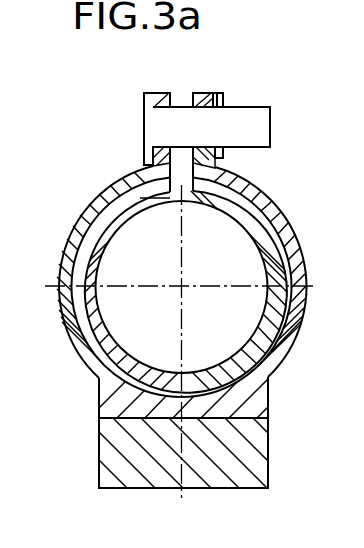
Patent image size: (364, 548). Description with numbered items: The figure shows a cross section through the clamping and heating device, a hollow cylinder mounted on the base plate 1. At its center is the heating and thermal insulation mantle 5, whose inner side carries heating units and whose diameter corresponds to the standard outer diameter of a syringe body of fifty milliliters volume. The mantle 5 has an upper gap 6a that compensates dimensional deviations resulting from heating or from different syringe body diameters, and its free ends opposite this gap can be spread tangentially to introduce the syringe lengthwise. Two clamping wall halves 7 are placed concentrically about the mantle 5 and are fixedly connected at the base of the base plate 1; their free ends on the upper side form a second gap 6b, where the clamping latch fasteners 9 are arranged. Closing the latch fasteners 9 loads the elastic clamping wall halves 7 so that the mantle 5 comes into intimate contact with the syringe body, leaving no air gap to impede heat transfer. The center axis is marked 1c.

The base plate 1 is at (110, 447).
The center of bore 1c is at (180, 288).
The heating and thermal insulation mantle 5 is at (108, 218).
The upper gap 6a is at (146, 166).
The second gap 6b is at (182, 100).
The clamping wall halves 7 is at (66, 245).
The clamping latch fasteners 9 is at (243, 125).